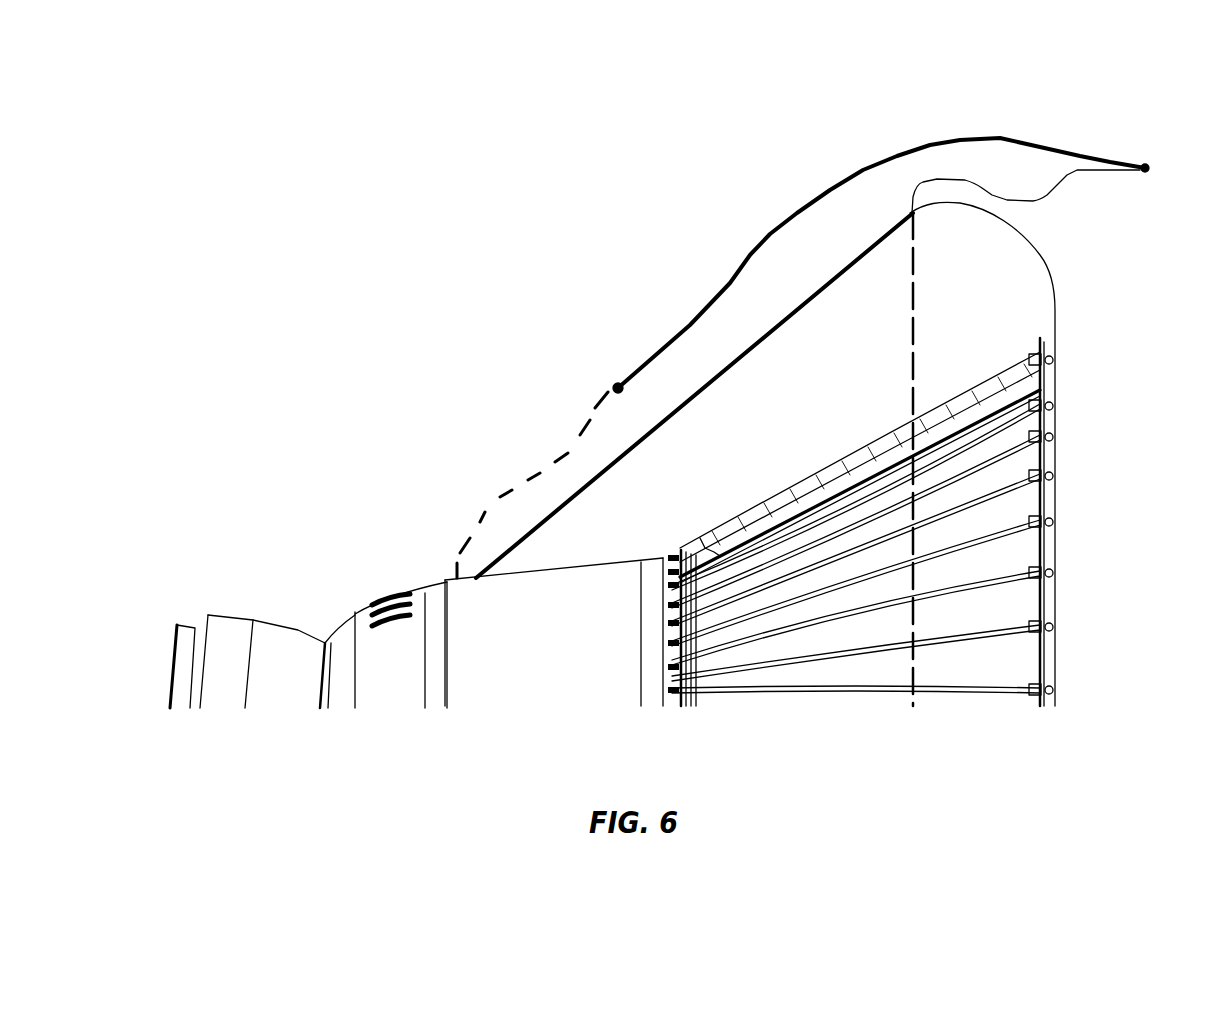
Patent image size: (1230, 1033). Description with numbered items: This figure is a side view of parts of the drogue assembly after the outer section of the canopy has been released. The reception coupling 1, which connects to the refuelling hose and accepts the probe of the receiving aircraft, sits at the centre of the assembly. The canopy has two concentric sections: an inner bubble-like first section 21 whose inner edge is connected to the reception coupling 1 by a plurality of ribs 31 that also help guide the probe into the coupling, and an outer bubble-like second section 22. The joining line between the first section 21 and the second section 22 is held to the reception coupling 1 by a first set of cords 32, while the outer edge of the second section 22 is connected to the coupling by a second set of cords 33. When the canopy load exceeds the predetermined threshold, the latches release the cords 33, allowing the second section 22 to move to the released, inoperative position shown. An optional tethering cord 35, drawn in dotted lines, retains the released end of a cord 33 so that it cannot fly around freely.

The reception coupling 1 is at (555, 665).
The first section 21 is at (1053, 278).
The second section 22 is at (1083, 172).
The ribs 31 is at (1042, 526).
The first set of cords 32 is at (850, 263).
The second set of cords 33 is at (738, 278).
The tethering cord 35 is at (505, 493).